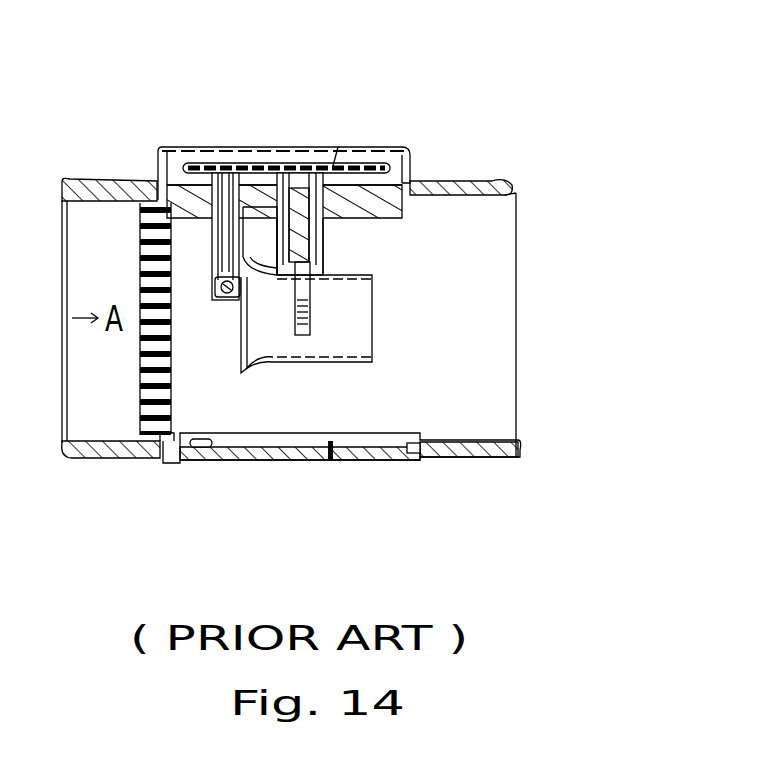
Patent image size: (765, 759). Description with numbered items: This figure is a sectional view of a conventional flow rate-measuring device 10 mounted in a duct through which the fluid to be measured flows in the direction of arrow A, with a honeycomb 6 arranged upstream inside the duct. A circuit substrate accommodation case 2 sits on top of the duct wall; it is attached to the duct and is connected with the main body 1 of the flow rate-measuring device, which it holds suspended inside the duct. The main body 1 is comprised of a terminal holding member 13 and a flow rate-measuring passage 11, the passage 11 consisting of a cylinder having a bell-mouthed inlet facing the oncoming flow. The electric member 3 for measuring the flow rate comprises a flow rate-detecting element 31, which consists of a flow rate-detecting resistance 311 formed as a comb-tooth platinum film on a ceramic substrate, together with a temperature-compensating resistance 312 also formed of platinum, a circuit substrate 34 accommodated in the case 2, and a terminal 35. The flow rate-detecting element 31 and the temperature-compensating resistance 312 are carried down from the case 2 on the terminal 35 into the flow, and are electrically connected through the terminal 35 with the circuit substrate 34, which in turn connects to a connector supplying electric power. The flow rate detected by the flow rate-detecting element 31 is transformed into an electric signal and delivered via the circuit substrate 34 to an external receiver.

The main body of the flow rate-measuring device 1 is at (325, 260).
The circuit substrate accommodation case 2 is at (183, 147).
The electric member 3 is at (388, 147).
The honeycomb 6 is at (150, 378).
The flow rate-measuring device 10 is at (267, 147).
The flow rate-measuring passage 11 is at (353, 343).
The terminal holding member 13 is at (328, 236).
The flow rate-detecting element 31 is at (327, 283).
The circuit substrate 34 is at (338, 147).
The terminal 35 is at (157, 187).
The flow rate-detecting resistance 311 is at (297, 335).
The temperature-compensating resistance 312 is at (228, 300).